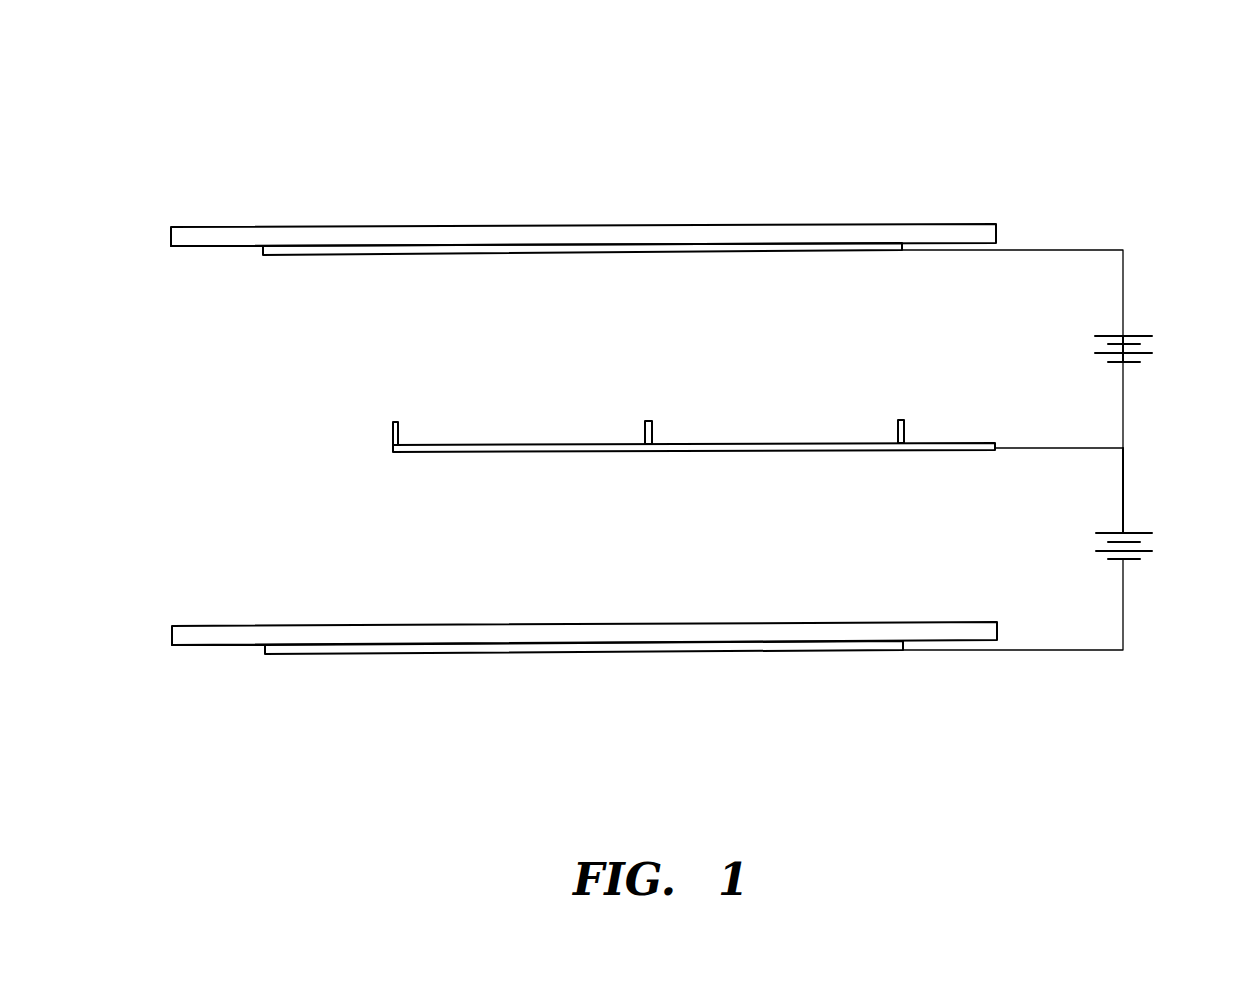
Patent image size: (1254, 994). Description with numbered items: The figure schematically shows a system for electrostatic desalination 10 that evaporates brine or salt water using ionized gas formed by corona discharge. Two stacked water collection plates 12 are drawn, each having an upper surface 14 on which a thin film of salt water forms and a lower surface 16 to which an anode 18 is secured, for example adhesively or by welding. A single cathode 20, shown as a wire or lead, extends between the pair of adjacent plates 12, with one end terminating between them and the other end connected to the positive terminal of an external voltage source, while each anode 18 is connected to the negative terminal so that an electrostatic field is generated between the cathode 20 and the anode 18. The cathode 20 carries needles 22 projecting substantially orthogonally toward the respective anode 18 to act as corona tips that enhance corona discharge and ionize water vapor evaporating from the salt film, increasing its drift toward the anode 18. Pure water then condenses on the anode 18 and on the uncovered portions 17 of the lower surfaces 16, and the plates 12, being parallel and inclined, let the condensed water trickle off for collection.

The system for electrostatic desalination 10 is at (1122, 110).
The water collection plate 12 is at (996, 226).
The upper surface 14 is at (962, 202).
The lower surface 16 is at (962, 262).
The uncovered portion 17 is at (188, 247).
The anode 18 is at (323, 255).
The cathode 20 is at (967, 450).
The needle 22 is at (410, 430).